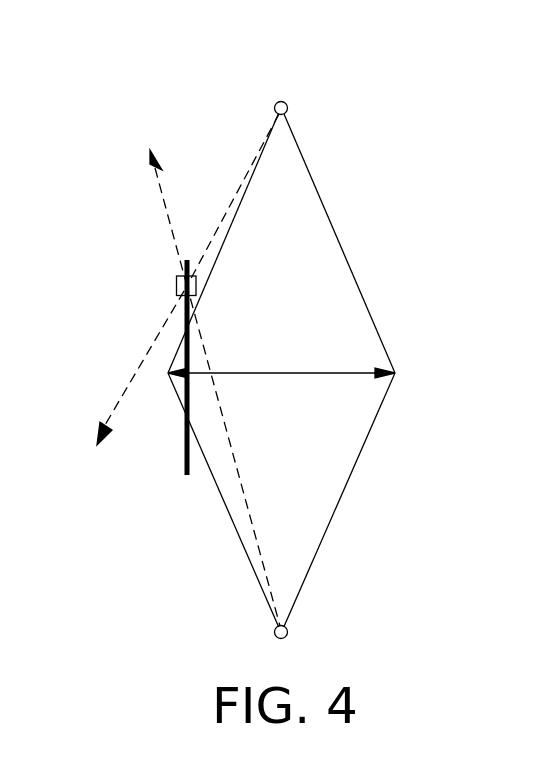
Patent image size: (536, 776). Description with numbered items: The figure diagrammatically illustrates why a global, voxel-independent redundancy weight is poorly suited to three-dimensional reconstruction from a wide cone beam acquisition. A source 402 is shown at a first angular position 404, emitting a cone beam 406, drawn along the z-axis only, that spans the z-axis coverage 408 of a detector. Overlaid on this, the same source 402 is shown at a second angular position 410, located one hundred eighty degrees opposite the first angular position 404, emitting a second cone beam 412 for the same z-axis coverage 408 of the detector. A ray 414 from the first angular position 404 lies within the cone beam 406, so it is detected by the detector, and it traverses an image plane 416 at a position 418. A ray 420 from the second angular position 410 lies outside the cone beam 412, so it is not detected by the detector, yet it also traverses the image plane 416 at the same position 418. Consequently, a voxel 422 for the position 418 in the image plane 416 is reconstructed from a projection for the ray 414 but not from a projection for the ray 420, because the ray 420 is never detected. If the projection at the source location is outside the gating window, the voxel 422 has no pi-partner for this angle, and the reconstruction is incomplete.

The source 402 is at (286, 103).
The first angular position 404 is at (255, 612).
The cone beam 406 is at (338, 502).
The z-axis coverage 408 is at (247, 373).
The second angular position 410 is at (255, 90).
The cone beam 412 is at (347, 263).
The ray 414 is at (235, 463).
The image plane 416 is at (183, 473).
The position 418 is at (196, 282).
The ray 420 is at (148, 350).
The voxel 422 is at (176, 280).